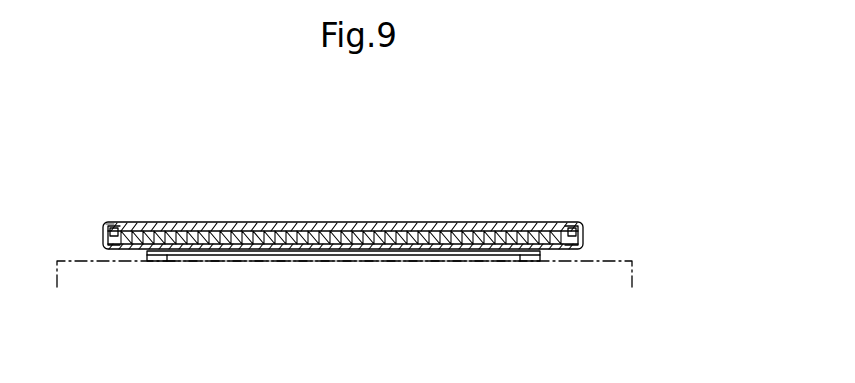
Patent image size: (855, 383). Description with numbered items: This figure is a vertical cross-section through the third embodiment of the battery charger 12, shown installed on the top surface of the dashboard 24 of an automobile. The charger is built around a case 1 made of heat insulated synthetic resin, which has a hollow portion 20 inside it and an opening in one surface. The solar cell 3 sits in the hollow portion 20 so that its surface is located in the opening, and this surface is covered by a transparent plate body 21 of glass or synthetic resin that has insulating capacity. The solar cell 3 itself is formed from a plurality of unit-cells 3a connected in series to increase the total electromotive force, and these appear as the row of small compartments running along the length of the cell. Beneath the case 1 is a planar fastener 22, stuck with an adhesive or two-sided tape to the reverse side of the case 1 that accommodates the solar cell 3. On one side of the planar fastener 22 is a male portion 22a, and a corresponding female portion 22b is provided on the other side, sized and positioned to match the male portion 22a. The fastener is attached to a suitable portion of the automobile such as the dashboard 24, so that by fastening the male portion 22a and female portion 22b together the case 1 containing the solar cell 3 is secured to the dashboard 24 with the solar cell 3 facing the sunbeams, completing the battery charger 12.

The case 1 is at (568, 223).
The solar cell 3 is at (551, 236).
The unit-cells 3a is at (276, 233).
The battery charger 12 is at (113, 213).
The hollow portion 20 is at (118, 221).
The transparent plate body 21 is at (362, 229).
The planar fastener 22 is at (473, 255).
The male portion 22a is at (188, 257).
The female portion 22b is at (337, 262).
The dashboard 24 is at (90, 259).